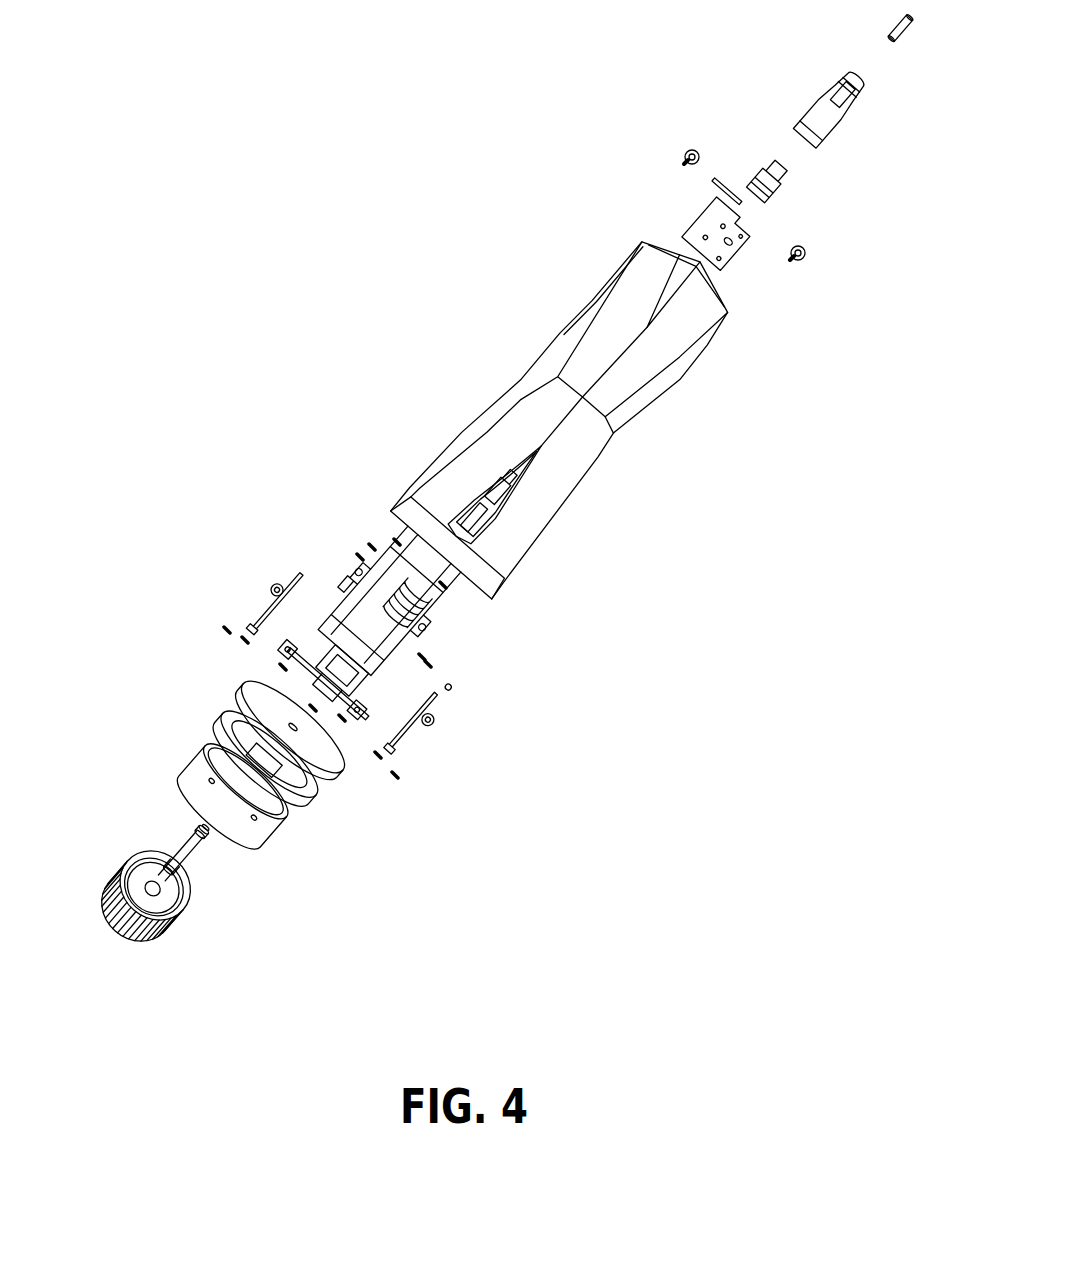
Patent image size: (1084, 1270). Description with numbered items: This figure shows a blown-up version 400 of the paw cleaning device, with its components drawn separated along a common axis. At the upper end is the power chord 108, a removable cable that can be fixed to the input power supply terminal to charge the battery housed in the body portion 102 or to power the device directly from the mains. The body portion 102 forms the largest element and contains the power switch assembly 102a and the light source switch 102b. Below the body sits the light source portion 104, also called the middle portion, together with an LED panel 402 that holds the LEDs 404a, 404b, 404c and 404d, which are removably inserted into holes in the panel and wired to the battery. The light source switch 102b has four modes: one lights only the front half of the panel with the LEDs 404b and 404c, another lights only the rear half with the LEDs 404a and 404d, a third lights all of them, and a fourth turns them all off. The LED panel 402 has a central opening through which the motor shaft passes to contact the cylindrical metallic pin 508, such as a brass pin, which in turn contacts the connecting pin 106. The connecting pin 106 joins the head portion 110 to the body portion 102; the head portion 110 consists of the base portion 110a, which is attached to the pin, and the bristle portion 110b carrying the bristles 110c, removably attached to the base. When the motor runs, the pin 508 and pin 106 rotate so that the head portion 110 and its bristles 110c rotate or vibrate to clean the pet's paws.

The blown-up version 400 is at (328, 119).
The body portion 102 is at (672, 382).
The power switch assembly 102a is at (405, 607).
The light source switch 102b is at (345, 678).
The light source portion 104 is at (338, 777).
The connecting pin 106 is at (193, 863).
The power chord 108 is at (833, 119).
The head portion 110 is at (174, 893).
The base portion 110a is at (173, 907).
The bristle portion 110b is at (158, 930).
The bristles 110c is at (157, 948).
The LED panel 402 is at (285, 667).
The LED 404a is at (402, 740).
The LED 404b is at (360, 708).
The LED 404c is at (290, 653).
The LED 404d is at (252, 623).
The middle portion shaft or pin 508 is at (280, 758).